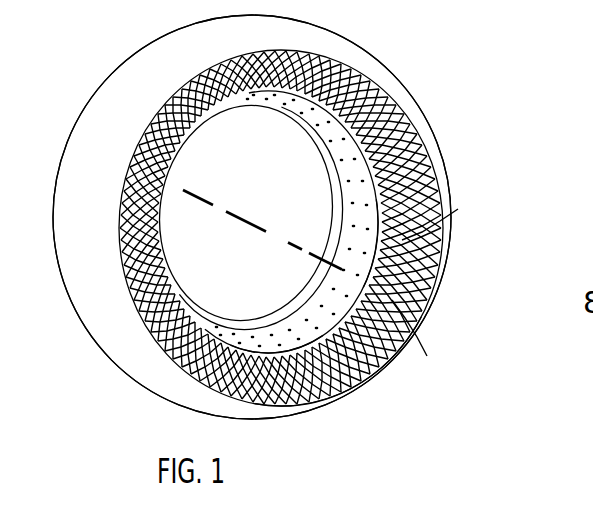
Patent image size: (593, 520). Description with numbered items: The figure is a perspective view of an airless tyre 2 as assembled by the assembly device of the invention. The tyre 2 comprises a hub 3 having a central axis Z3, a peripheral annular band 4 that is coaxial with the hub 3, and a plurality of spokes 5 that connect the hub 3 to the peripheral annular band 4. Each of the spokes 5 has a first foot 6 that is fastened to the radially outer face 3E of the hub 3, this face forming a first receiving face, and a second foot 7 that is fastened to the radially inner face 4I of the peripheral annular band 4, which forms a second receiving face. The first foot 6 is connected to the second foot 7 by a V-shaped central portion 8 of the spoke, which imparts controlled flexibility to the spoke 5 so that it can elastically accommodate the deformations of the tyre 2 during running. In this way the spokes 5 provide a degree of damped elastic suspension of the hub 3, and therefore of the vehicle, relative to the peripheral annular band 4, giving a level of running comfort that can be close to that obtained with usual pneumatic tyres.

The tyre 2 is at (421, 40).
The hub 3 is at (277, 337).
The radially outer face of the hub 3E is at (297, 363).
The peripheral annular band 4 is at (423, 118).
The radially inner face of the peripheral annular band 4I is at (381, 367).
The spokes 5 is at (428, 195).
The first foot 6 is at (377, 258).
The second foot 7 is at (418, 268).
The V-shaped central portion 8 is at (410, 308).
The central axis Z3 is at (234, 214).